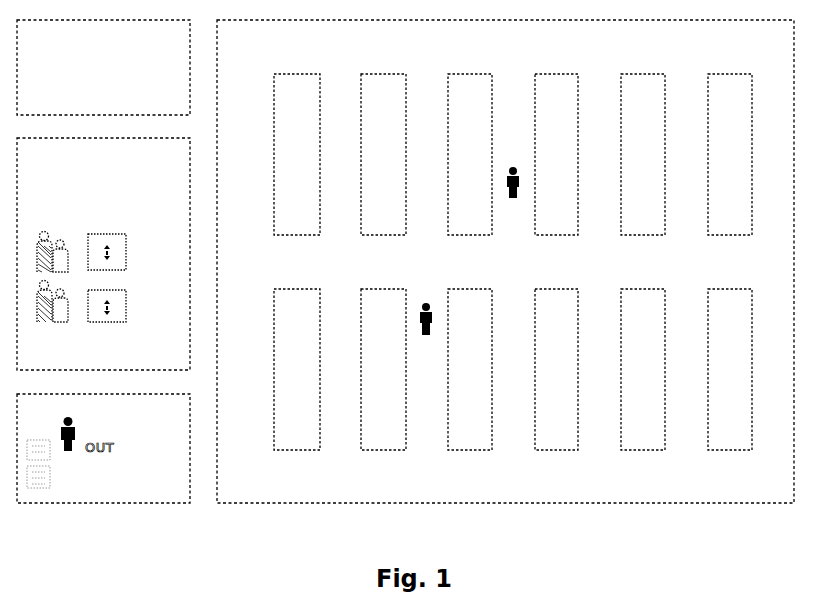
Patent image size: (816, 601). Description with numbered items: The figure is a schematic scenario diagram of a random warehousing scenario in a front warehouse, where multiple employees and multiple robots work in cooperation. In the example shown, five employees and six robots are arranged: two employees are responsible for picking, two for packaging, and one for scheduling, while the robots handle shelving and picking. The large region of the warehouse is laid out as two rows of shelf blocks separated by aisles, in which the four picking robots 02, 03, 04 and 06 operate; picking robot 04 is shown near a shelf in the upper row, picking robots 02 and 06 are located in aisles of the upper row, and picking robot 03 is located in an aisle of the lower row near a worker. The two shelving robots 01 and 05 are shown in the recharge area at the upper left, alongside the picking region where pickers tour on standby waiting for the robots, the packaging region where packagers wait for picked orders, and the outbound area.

The shelving robot 01 is at (86, 52).
The shelving robot 05 is at (106, 52).
The picking robot 04 is at (383, 140).
The picking robot 02 is at (340, 154).
The picking robot 06 is at (686, 154).
The picking robot 03 is at (427, 369).